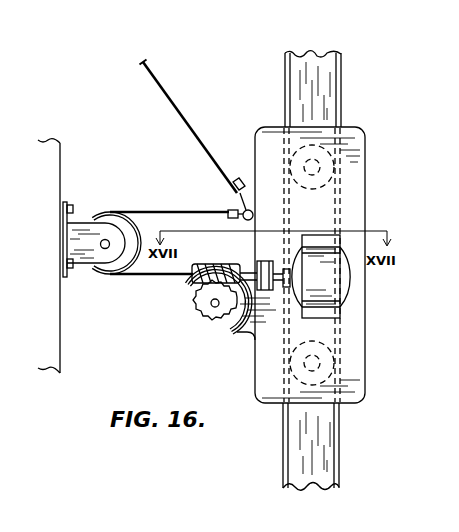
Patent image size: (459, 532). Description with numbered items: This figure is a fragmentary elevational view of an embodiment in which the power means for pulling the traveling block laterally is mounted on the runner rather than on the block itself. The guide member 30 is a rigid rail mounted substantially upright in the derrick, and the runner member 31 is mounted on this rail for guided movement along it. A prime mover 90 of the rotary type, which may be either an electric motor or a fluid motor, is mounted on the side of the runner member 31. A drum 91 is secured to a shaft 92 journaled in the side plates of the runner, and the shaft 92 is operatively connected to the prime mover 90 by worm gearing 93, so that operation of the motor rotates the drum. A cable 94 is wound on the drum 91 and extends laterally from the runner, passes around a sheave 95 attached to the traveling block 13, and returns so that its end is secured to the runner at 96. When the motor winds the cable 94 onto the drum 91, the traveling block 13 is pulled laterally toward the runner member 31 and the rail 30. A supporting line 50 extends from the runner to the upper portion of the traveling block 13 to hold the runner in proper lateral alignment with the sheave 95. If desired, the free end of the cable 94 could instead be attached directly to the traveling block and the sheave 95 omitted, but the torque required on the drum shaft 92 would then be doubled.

The traveling block 13 is at (52, 172).
The guide member 30 is at (327, 80).
The runner member 31 is at (355, 150).
The supporting line 50 is at (188, 123).
The prime mover 90 is at (351, 278).
The drum 91 is at (204, 336).
The shaft 92 is at (210, 303).
The worm gearing 93 is at (222, 308).
The cable 94 is at (172, 212).
The sheave 95 is at (115, 213).
The cable end securing point 96 is at (254, 214).